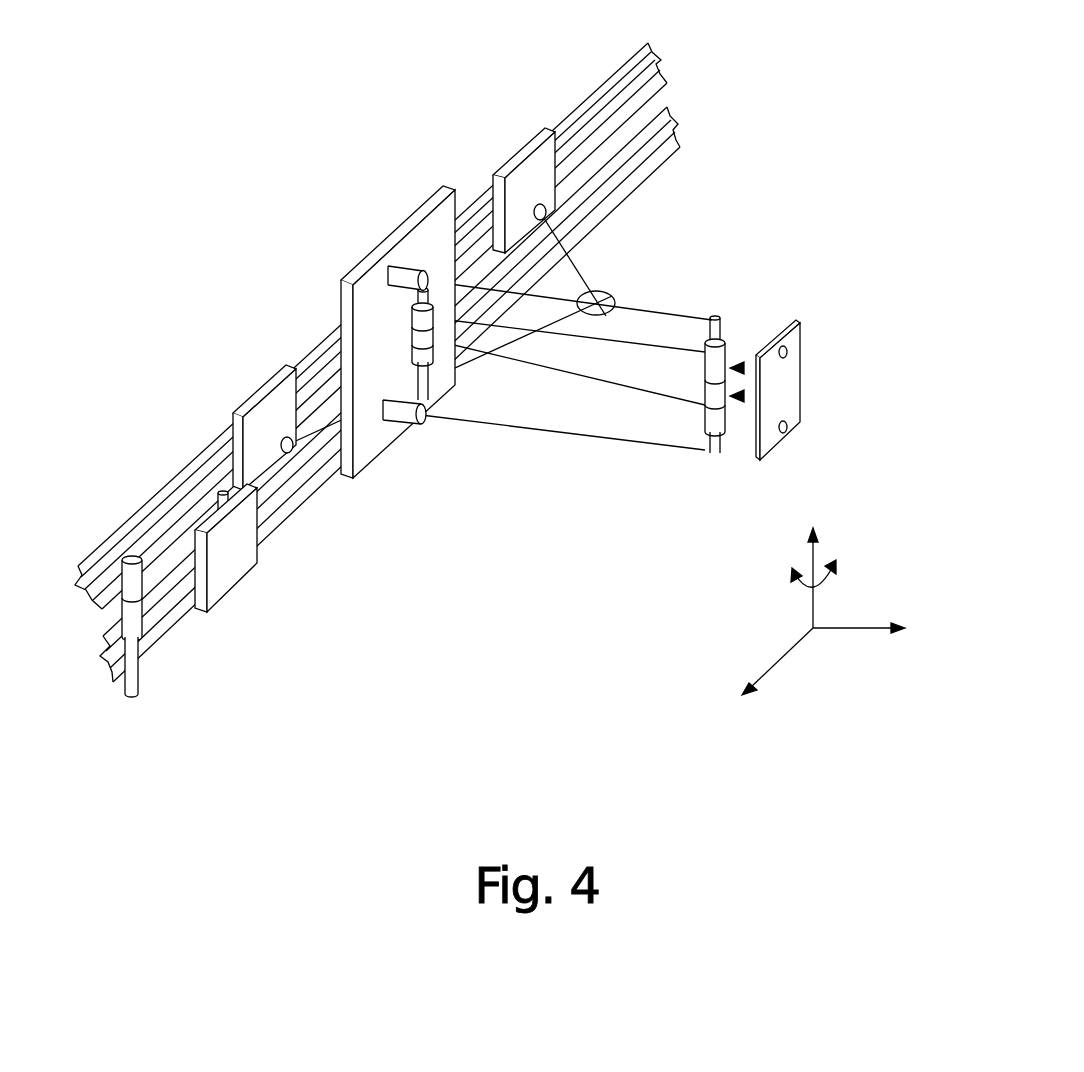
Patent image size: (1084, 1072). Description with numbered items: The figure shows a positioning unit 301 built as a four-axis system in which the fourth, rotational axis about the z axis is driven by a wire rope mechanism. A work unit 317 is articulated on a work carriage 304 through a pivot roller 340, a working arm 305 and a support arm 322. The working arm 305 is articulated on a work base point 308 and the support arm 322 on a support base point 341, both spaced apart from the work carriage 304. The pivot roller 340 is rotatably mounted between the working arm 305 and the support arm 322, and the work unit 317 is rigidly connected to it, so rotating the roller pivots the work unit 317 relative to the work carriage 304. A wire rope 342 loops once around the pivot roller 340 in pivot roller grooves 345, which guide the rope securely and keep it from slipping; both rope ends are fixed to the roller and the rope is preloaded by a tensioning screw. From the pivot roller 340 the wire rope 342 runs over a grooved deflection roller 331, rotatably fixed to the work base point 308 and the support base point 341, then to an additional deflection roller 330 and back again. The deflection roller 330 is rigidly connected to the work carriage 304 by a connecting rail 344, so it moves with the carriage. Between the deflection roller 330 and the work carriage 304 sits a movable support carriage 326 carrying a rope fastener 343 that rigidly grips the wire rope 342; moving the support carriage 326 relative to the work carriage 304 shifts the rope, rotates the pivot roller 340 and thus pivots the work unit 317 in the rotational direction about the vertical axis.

The positioning unit 301 is at (806, 123).
The work carriage 304 is at (432, 230).
The working arm 305 is at (630, 300).
The work base point 308 is at (421, 270).
The work unit 317 is at (798, 350).
The support arm 322 is at (487, 430).
The support carriage 326 is at (228, 580).
The deflection roller 330 is at (128, 572).
The deflection roller 331 is at (412, 306).
The pivot roller 340 is at (712, 405).
The support base point 341 is at (421, 420).
The wire rope 342 is at (612, 387).
The rope fastener 343 is at (214, 492).
The connecting rail 344 is at (305, 537).
The pivot roller grooves 345 is at (742, 368).